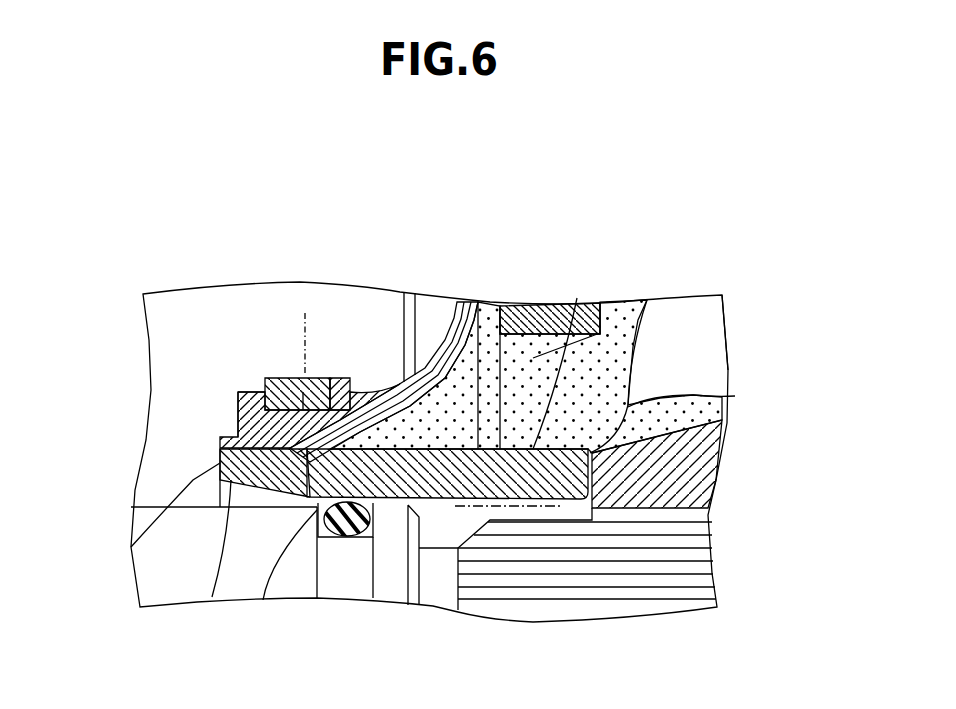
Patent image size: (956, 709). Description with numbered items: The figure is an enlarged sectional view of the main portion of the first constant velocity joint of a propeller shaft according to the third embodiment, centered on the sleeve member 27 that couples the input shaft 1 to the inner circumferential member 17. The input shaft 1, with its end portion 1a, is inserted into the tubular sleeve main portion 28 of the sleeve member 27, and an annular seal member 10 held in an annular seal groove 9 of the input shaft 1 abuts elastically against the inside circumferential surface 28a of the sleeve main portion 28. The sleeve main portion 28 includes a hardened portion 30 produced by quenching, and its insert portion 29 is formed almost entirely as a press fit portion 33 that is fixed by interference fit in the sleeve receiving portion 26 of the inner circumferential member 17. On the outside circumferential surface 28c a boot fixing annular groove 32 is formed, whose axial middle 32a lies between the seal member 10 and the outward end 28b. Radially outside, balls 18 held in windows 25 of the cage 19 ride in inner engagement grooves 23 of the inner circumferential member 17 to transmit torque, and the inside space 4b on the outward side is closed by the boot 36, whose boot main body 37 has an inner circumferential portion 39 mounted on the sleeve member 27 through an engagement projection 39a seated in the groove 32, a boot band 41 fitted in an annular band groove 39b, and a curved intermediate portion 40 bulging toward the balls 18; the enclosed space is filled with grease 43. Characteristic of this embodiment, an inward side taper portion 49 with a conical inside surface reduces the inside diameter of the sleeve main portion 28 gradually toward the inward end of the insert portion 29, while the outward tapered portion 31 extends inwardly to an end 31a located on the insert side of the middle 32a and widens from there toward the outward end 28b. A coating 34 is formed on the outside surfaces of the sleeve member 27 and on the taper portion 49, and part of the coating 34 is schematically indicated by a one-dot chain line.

The input shaft 1 is at (173, 587).
The end portion 1a is at (627, 603).
The inside space 4b is at (397, 380).
The annular seal groove 9 is at (333, 567).
The annular seal member 10 is at (366, 537).
The inner circumferential member 17 is at (715, 487).
The balls 18 is at (693, 357).
The cage 19 is at (482, 380).
The inner engagement grooves 23 is at (735, 396).
The windows 25 is at (620, 298).
The sleeve receiving portion 26 is at (650, 298).
The sleeve member 27 is at (219, 455).
The sleeve main portion 28 is at (465, 300).
The inside circumferential surface 28a is at (427, 612).
The outward end 28b is at (131, 547).
The outside circumferential surface 28c is at (497, 304).
The insert portion 29 is at (583, 342).
The press fit portion 33 is at (577, 298).
The hardened portion 30 is at (455, 550).
The tapered portion 31 is at (212, 597).
The end 31a is at (263, 600).
The boot fixing annular groove 32 is at (343, 537).
The middle 32a is at (238, 402).
The coating 34 is at (490, 520).
The boot 36 is at (250, 375).
The boot main body 37 is at (238, 421).
The inner circumferential portion 39 is at (240, 392).
The engagement projection 39a is at (328, 376).
The annular band groove 39b is at (270, 377).
The intermediate portion 40 is at (408, 296).
The boot band 41 is at (295, 375).
The grease 43 is at (533, 358).
The inward side taper portion 49 is at (583, 512).